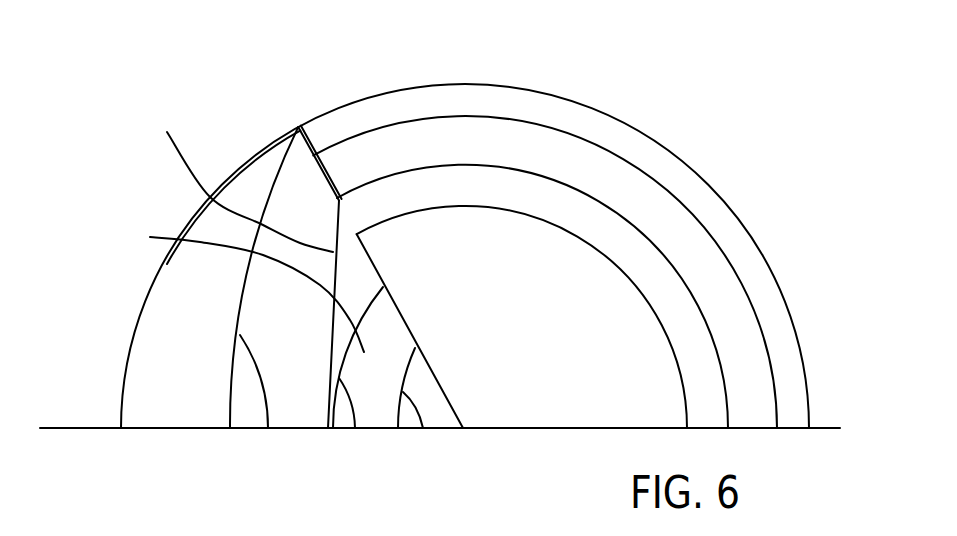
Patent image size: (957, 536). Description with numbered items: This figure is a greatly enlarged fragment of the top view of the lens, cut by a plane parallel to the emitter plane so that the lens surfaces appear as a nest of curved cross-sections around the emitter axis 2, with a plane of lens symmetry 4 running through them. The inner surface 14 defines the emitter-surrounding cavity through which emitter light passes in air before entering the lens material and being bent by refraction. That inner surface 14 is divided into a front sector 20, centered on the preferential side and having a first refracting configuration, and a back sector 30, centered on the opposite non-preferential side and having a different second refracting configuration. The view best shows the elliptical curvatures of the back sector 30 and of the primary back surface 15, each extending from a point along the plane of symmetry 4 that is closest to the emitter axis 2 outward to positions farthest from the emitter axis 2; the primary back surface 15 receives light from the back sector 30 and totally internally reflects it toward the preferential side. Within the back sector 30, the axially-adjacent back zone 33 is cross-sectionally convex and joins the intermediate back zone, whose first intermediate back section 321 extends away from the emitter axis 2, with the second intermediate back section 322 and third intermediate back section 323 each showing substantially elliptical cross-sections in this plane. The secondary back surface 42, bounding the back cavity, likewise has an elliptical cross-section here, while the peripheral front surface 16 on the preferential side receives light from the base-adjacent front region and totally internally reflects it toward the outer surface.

The emitter axis 2 is at (463, 428).
The plane of lens symmetry 4 is at (828, 428).
The inner surface 14 is at (535, 263).
The primary back surface 15 is at (244, 176).
The peripheral front surface 16 is at (677, 238).
The front sector 20 is at (515, 237).
The back sector 30 is at (242, 287).
The axially-adjacent back zone 33 is at (417, 383).
The secondary back surface 42 is at (268, 428).
The first intermediate back section 321 is at (383, 337).
The second intermediate back section 322 is at (423, 428).
The third intermediate back section 323 is at (355, 428).